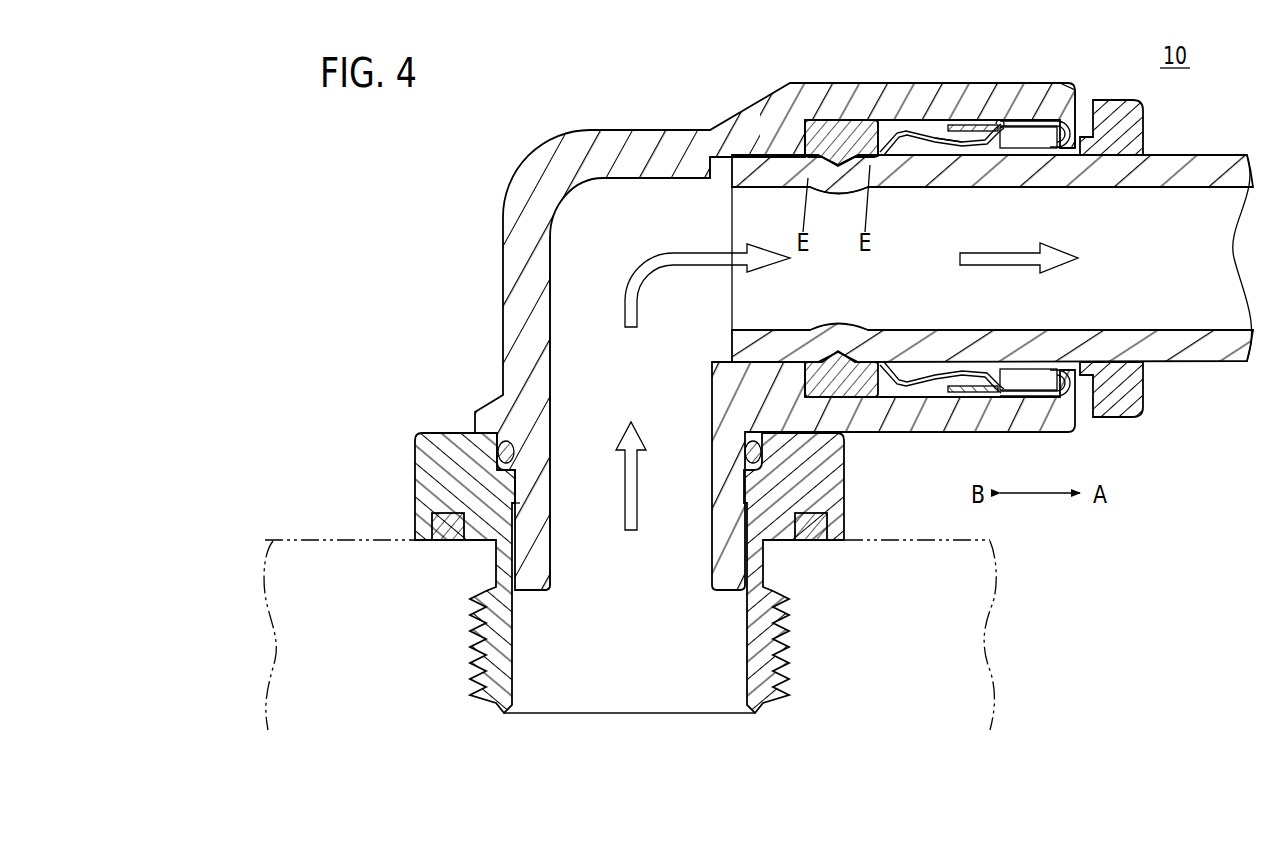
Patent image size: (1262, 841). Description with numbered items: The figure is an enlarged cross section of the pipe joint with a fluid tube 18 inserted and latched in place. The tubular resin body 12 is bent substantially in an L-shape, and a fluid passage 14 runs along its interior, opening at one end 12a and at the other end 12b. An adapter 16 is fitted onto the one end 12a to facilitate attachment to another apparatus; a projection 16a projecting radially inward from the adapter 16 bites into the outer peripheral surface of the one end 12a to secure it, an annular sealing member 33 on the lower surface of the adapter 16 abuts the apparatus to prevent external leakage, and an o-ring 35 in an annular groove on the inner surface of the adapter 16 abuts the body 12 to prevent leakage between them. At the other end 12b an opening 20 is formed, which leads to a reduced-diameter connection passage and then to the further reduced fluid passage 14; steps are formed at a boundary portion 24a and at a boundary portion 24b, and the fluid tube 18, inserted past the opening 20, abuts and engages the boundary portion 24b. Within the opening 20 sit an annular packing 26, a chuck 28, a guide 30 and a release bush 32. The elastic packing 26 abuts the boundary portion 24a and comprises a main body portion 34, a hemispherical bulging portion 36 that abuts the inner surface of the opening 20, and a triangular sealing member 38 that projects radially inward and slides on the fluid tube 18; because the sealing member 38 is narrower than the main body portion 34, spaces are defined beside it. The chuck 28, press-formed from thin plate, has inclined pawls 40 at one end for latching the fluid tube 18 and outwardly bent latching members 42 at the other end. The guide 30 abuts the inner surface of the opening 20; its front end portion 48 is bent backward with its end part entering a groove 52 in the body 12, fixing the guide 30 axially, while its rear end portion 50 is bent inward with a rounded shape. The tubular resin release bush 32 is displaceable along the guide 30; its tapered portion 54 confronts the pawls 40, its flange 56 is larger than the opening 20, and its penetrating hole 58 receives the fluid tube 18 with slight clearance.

The body 12 is at (668, 125).
The one end 12a is at (545, 590).
The other end 12b is at (1052, 100).
The fluid passage 14 is at (590, 318).
The adapter 16 is at (412, 458).
The projection 16a is at (520, 500).
The fluid tube 18 is at (1218, 170).
The opening 20 is at (900, 385).
The boundary portion 24a is at (818, 355).
The boundary portion 24b is at (716, 168).
The packing 26 is at (860, 125).
The chuck 28 is at (905, 132).
The guide 30 is at (1017, 113).
The release bush 32 is at (1150, 393).
The sealing member 33 is at (443, 542).
The main body portion 34 is at (820, 118).
The o-ring 35 is at (516, 455).
The bulging portion 36 is at (850, 120).
The sealing member 38 is at (828, 170).
The inclined pawls 40 is at (868, 165).
The latching members 42 is at (1012, 170).
The front end portion 48 is at (980, 124).
The rear end portion 50 is at (1058, 170).
The groove 52 is at (1000, 124).
The tapered portion 54 is at (935, 165).
The flange 56 is at (1132, 118).
The penetrating hole 58 is at (1105, 330).